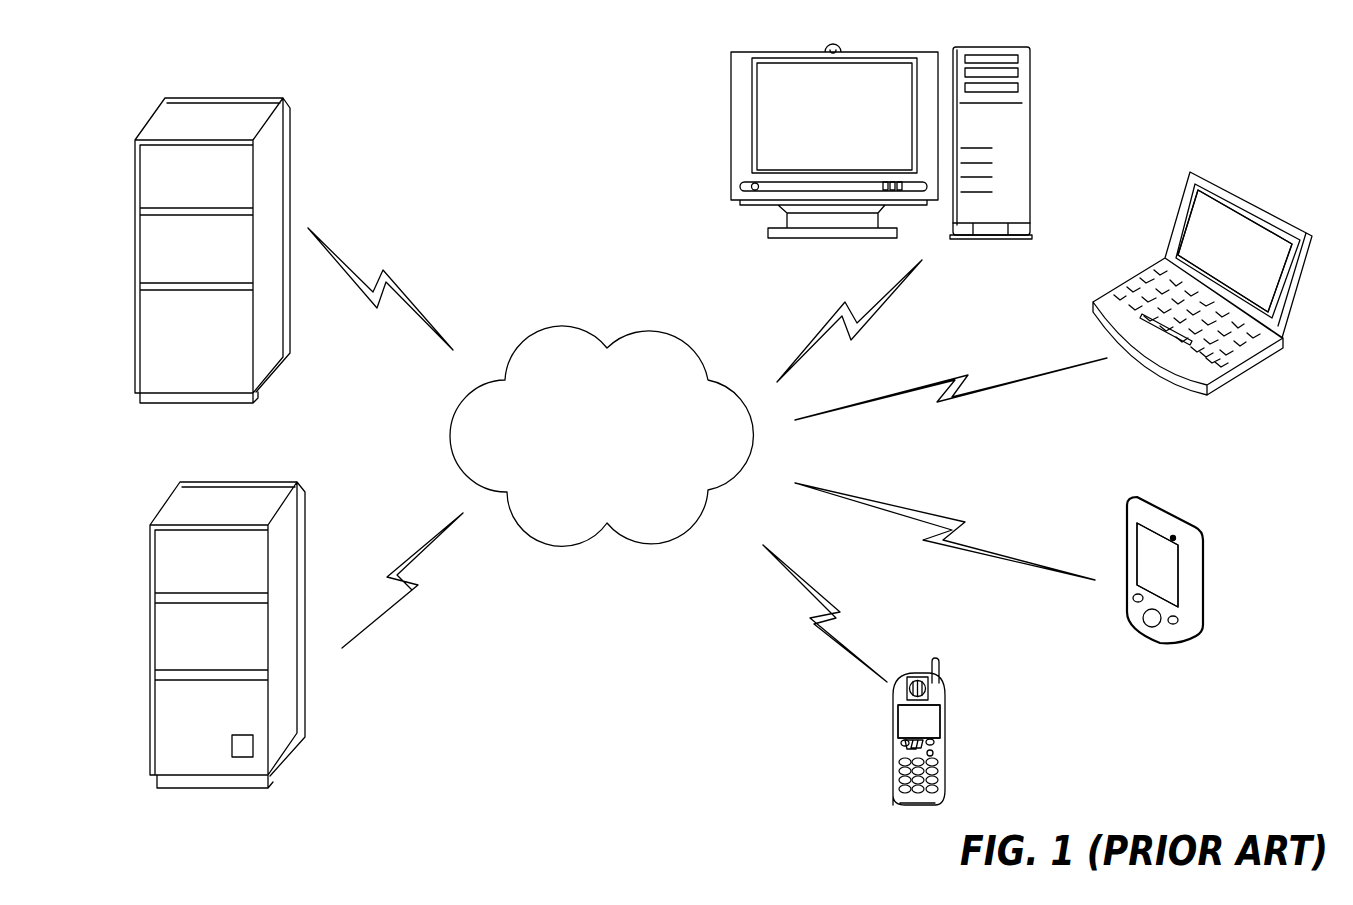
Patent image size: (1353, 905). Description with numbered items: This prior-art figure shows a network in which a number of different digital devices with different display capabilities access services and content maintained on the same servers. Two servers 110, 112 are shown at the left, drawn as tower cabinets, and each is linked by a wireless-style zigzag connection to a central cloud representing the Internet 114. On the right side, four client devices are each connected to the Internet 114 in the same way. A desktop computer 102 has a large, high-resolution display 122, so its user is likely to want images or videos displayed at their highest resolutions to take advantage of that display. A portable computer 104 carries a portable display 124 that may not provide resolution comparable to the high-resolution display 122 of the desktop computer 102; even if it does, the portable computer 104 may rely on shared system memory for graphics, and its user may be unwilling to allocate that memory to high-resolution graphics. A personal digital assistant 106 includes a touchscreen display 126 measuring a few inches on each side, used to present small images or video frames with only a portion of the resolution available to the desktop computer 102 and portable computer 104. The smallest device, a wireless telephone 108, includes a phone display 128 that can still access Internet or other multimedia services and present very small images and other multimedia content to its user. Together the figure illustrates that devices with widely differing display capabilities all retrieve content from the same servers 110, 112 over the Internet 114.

The desktop computer 102 is at (1031, 145).
The portable computer 104 is at (1247, 192).
The personal digital assistant 106 is at (1180, 510).
The wireless telephone 108 is at (940, 690).
The server 110 is at (290, 122).
The server 112 is at (298, 494).
The Internet 114 is at (648, 548).
The high-resolution display 122 is at (755, 133).
The portable display 124 is at (1185, 228).
The touchscreen display 126 is at (1137, 537).
The phone display 128 is at (897, 722).